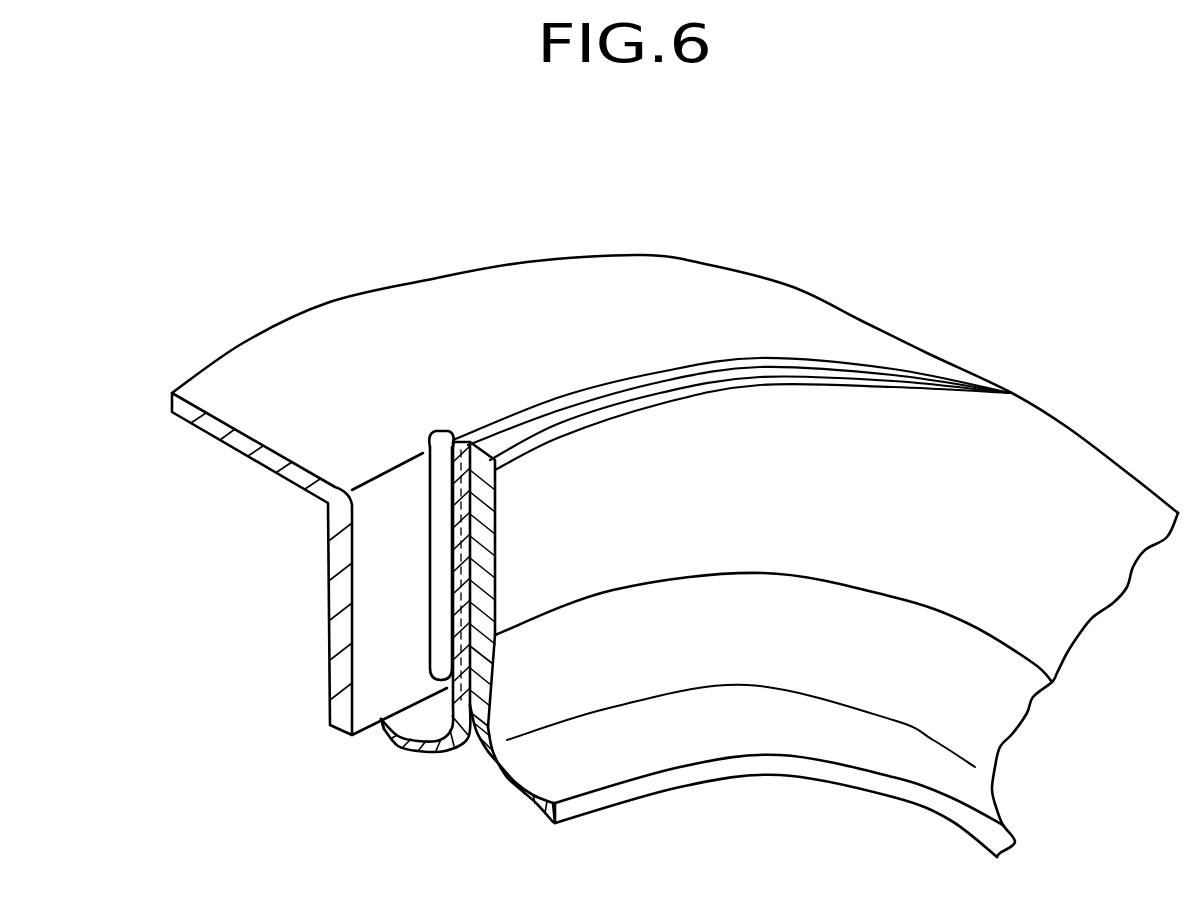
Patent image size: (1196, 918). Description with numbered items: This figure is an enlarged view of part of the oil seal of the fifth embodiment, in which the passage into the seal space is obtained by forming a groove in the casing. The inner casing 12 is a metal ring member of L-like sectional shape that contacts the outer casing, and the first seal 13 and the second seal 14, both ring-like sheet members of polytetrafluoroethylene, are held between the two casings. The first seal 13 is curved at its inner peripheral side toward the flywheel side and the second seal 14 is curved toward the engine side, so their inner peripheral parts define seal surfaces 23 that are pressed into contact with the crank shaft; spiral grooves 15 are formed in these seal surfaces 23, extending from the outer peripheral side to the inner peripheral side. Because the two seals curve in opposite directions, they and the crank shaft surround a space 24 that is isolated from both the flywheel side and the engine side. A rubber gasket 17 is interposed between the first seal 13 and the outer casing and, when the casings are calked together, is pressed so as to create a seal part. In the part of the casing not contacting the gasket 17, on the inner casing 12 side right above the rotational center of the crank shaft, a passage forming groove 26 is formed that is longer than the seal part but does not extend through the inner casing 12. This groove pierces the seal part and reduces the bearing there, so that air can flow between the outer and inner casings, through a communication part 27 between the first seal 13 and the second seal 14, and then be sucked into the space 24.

The inner casing 12 is at (710, 287).
The first seal 13 is at (563, 770).
The second seal 14 is at (422, 703).
The spiral grooves 15 is at (415, 747).
The gasket 17 is at (942, 437).
The seal surfaces 23 is at (392, 737).
The space 24 is at (495, 740).
The passage forming groove 26 is at (445, 447).
The communication part 27 is at (493, 550).